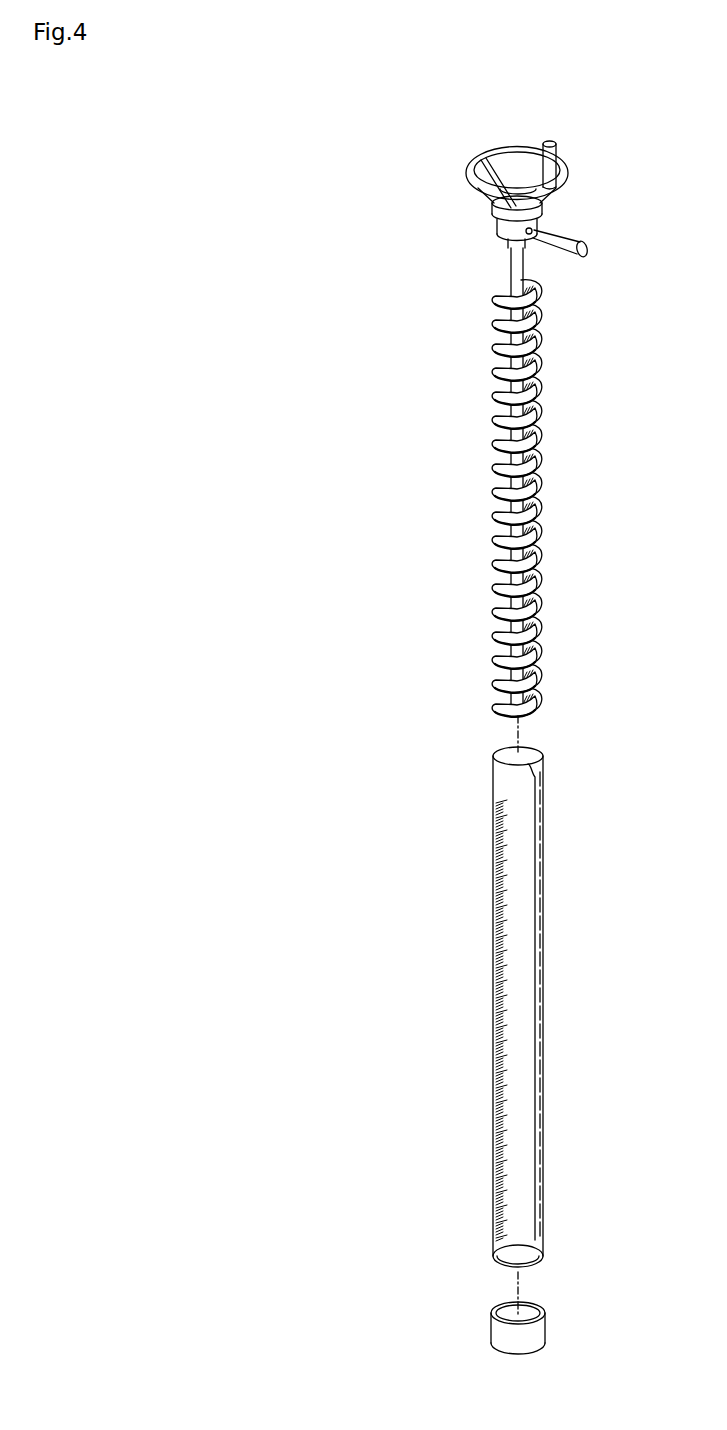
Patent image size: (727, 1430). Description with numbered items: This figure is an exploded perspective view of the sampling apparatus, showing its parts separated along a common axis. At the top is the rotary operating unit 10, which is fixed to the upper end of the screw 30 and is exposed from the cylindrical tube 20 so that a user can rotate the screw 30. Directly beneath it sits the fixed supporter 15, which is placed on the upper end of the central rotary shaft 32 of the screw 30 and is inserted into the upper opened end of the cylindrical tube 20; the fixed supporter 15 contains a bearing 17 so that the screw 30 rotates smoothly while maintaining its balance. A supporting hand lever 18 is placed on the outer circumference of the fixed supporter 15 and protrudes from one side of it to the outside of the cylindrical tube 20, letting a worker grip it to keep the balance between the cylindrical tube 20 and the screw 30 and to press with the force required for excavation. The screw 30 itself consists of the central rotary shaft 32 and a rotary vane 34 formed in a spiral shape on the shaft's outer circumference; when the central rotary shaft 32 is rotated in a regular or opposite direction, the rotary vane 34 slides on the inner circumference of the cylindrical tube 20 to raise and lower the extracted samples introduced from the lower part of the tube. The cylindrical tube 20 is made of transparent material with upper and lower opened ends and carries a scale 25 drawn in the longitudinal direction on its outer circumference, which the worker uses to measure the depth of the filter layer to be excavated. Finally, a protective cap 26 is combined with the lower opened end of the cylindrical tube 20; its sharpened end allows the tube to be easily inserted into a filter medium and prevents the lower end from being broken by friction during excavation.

The rotary operating unit 10 is at (522, 143).
The fixed supporter 15 is at (481, 239).
The bearing 17 is at (494, 201).
The supporting hand lever 18 is at (588, 243).
The cylindrical tube 20 is at (518, 1007).
The scale 25 is at (494, 833).
The protective cap 26 is at (548, 1332).
The screw 30 is at (461, 482).
The central rotary shaft 32 is at (498, 400).
The rotary vane 34 is at (531, 495).